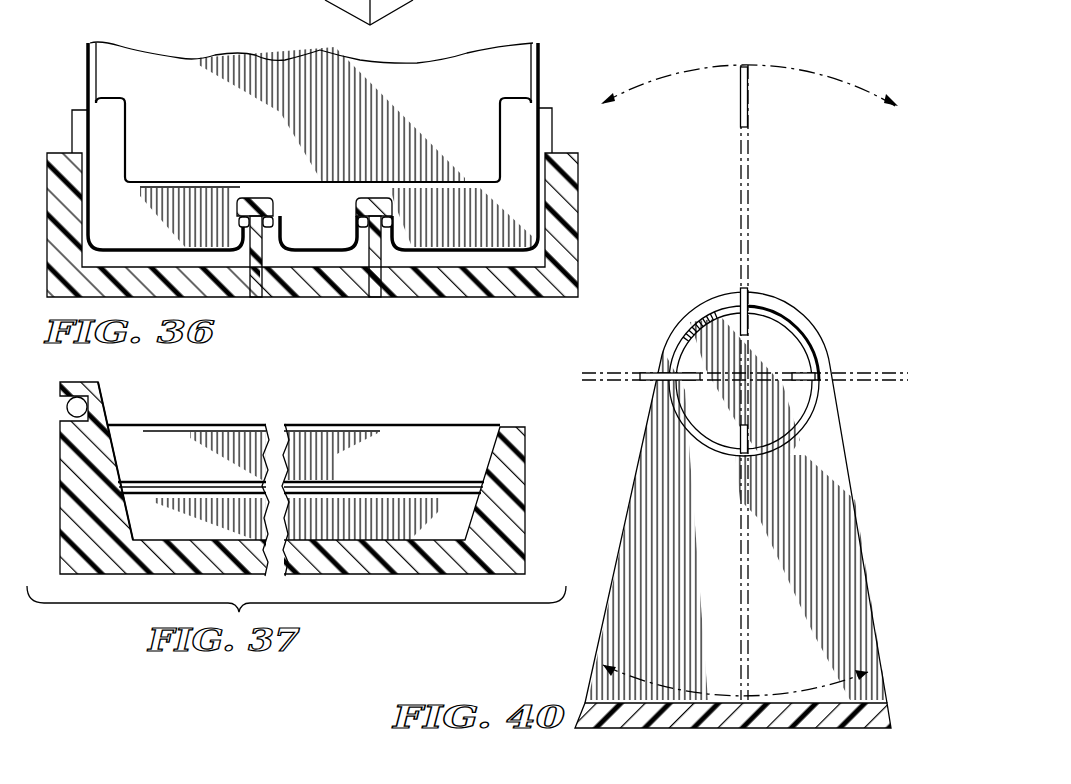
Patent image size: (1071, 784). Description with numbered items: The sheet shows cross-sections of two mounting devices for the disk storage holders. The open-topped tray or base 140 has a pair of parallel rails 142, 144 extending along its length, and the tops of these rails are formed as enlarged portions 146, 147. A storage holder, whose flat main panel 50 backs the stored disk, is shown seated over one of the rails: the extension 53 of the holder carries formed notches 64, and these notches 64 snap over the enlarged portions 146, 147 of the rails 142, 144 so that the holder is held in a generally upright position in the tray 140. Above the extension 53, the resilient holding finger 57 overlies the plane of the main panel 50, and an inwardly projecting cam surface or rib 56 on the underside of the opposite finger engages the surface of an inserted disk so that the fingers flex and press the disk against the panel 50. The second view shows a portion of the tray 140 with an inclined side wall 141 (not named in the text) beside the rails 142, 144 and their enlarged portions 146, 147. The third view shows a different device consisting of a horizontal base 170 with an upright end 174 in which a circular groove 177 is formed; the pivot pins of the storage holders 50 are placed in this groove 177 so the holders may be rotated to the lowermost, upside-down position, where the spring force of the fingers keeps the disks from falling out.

In FIG. 36, the main panel 50 is at (88, 62).
In FIG. 40, the main panel 50 is at (749, 162).
In FIG. 36, the extension 53 is at (162, 233).
In FIG. 36, the cam surface or rib 56 is at (106, 110).
In FIG. 36, the resilient holding finger 57 is at (520, 118).
In FIG. 36, the notches 64 is at (273, 226).
In FIG. 36, the tray or base 140 is at (578, 219).
In FIG. 37, the tray or base 140 is at (500, 465).
In FIG. 37, the inclined wall 141 is at (112, 442).
In FIG. 36, the rail 142 is at (267, 276).
In FIG. 37, the rail 142 is at (340, 508).
In FIG. 36, the rail 144 is at (382, 252).
In FIG. 36, the enlarged portion 146 is at (250, 198).
In FIG. 37, the enlarged portion 146 is at (445, 462).
In FIG. 36, the enlarged portion 147 is at (369, 198).
In FIG. 40, the horizontal base 170 is at (597, 703).
In FIG. 40, the upright end 174 is at (860, 463).
In FIG. 40, the circular groove 177 is at (690, 432).